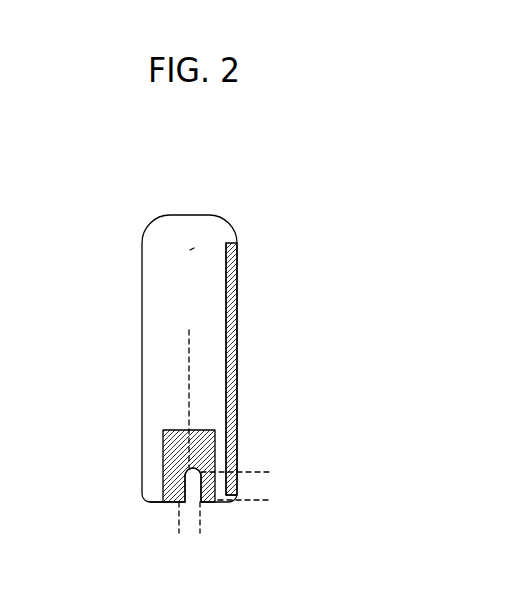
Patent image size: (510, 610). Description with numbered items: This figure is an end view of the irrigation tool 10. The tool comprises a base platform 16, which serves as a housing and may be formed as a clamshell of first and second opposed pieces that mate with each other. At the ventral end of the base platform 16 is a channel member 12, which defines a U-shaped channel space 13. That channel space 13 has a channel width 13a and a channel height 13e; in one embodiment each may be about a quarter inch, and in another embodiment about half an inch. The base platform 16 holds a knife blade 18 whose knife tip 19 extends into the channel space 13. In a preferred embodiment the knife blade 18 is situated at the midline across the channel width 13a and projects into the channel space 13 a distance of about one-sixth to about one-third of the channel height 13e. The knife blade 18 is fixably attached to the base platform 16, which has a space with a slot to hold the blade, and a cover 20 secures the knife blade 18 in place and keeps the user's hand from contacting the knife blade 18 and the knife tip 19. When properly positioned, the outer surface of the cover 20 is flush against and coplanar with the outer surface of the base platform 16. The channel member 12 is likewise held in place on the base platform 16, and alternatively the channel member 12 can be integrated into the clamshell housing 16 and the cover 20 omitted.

The irrigation tool 10 is at (149, 210).
The channel member 12 is at (213, 467).
The channel space 13 is at (190, 490).
The channel width 13a is at (188, 532).
The channel height 13e is at (265, 492).
The base platform 16 is at (193, 251).
The knife blade 18 is at (189, 380).
The knife tip 19 is at (163, 488).
The cover 20 is at (232, 372).